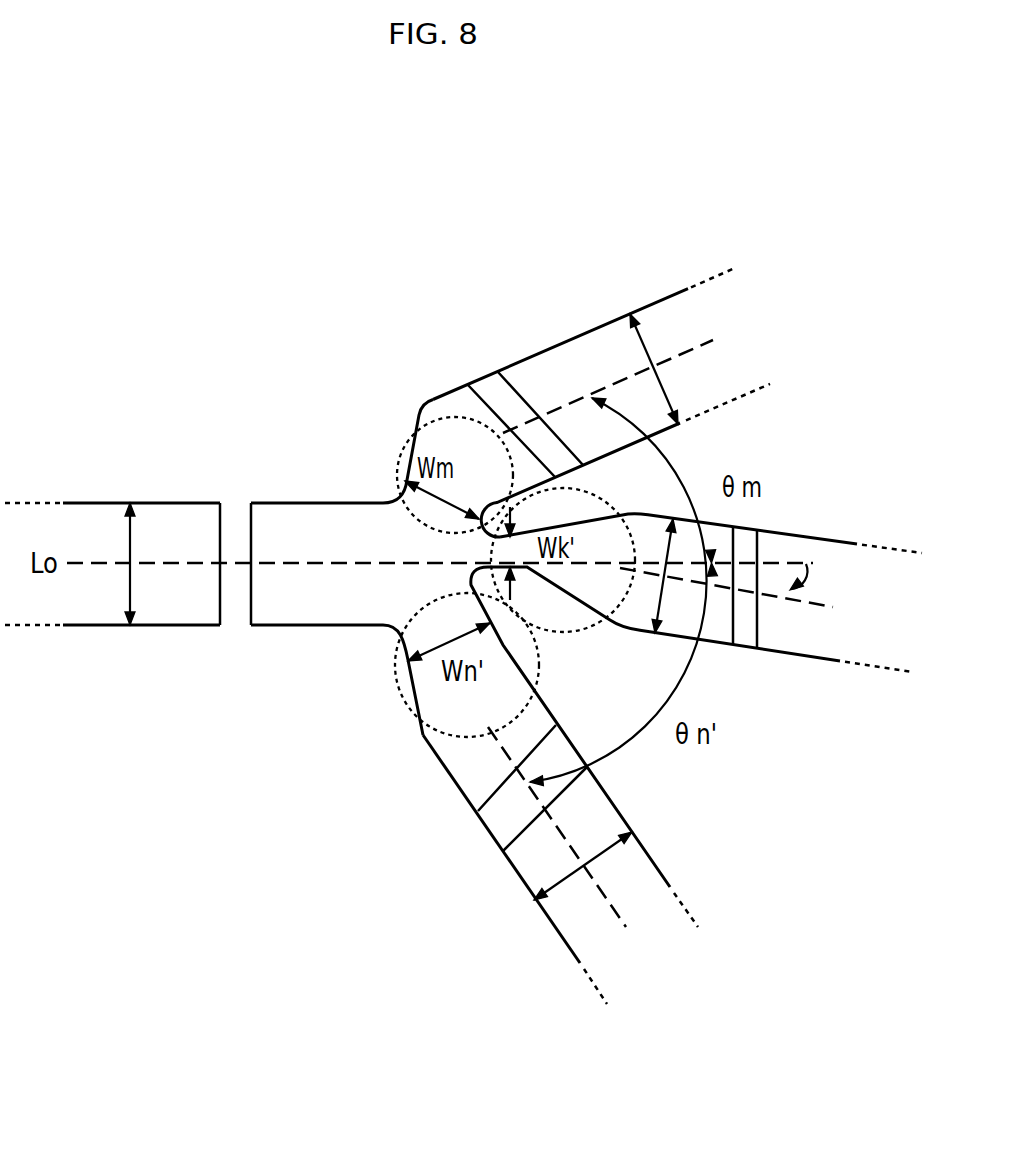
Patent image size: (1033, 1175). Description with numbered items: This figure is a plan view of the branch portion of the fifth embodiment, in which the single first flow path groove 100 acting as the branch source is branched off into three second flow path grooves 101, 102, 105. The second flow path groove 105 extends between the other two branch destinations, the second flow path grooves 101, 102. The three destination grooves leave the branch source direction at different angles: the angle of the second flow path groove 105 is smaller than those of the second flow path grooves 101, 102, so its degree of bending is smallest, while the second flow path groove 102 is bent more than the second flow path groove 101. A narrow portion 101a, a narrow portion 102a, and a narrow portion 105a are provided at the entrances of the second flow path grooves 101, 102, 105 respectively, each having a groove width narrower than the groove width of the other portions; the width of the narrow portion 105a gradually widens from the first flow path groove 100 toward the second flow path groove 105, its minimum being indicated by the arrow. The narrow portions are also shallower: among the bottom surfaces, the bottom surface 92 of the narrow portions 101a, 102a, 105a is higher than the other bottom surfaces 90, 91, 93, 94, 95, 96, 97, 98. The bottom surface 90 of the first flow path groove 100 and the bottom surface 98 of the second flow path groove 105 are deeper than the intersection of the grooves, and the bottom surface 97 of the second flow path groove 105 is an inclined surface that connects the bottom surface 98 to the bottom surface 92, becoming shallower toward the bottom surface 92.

The bottom surface 90 is at (113, 549).
The bottom surface 91 is at (237, 513).
The bottom surface 92 is at (333, 549).
The bottom surface 93 is at (485, 388).
The bottom surface 94 is at (573, 392).
The bottom surface 95 is at (500, 813).
The bottom surface 96 is at (604, 824).
The bottom surface 97 is at (743, 632).
The bottom surface 98 is at (819, 641).
The first flow path groove 100 is at (160, 503).
The second flow path groove 101 is at (558, 343).
The narrow portion 101a is at (406, 443).
The second flow path groove 102 is at (648, 848).
The narrow portion 102a is at (398, 680).
The second flow path groove 105 is at (770, 528).
The narrow portion 105a is at (591, 549).